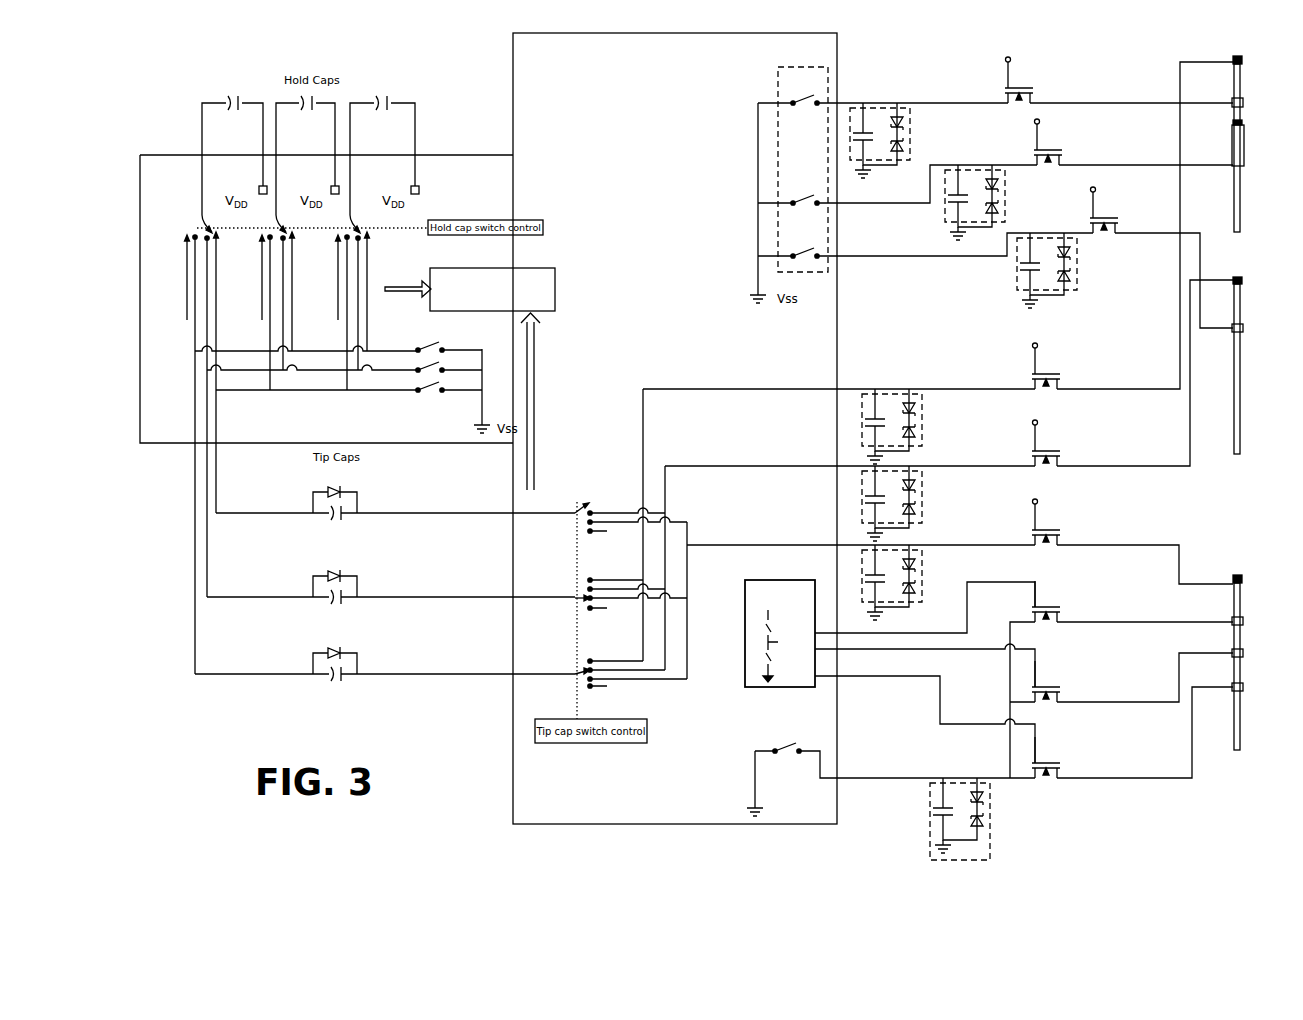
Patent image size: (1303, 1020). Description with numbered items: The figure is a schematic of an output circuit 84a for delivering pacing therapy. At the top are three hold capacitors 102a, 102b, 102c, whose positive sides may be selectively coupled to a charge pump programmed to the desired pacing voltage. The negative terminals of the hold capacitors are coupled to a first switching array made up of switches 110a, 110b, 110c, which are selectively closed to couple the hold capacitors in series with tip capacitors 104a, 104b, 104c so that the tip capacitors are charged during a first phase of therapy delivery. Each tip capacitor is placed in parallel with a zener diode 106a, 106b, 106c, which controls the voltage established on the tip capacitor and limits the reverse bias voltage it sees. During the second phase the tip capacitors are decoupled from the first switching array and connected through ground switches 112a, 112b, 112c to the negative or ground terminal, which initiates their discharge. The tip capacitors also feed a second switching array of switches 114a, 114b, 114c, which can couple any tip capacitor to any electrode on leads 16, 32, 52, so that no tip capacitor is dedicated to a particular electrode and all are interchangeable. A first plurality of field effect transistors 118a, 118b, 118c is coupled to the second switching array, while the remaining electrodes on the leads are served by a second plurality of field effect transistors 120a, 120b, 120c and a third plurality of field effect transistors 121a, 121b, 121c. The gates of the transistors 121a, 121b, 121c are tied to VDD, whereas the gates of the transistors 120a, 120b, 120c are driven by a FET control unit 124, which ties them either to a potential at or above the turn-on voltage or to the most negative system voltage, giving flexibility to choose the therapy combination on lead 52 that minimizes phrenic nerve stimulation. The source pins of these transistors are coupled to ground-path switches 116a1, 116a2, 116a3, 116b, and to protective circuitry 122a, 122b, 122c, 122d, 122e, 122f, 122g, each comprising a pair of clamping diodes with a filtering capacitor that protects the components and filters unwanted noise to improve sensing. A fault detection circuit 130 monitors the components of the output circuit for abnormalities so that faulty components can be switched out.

The output circuit 84a is at (655, 858).
The hold capacitor 102a is at (234, 155).
The hold capacitor 102b is at (307, 155).
The hold capacitor 102c is at (384, 155).
The tip capacitor 104a is at (336, 526).
The tip capacitor 104b is at (337, 608).
The tip capacitor 104c is at (336, 687).
The zener diode 106a is at (335, 492).
The zener diode 106b is at (335, 573).
The zener diode 106c is at (335, 652).
The switch 110a is at (220, 444).
The switch 110b is at (295, 302).
The switch 110c is at (370, 302).
The ground switch 112a is at (338, 342).
The ground switch 112b is at (344, 363).
The ground switch 112c is at (349, 383).
The switch 114a is at (631, 506).
The switch 114b is at (631, 585).
The switch 114c is at (631, 663).
The ground-path switch 116a1 is at (804, 94).
The ground-path switch 116a2 is at (804, 194).
The ground-path switch 116a3 is at (804, 247).
The ground-path switch 116b is at (767, 771).
The field effect transistor 118a is at (1113, 225).
The field effect transistor 118b is at (1113, 373).
The field effect transistor 118c is at (1113, 540).
The field effect transistor 120a is at (1132, 601).
The field effect transistor 120b is at (1132, 677).
The field effect transistor 120c is at (1132, 732).
The field effect transistor 121a is at (1099, 79).
The field effect transistor 121b is at (1114, 141).
The field effect transistor 121c is at (1142, 256).
The protective circuitry 122a is at (899, 147).
The protective circuitry 122b is at (984, 207).
The protective circuitry 122c is at (1056, 273).
The protective circuitry 122d is at (901, 426).
The protective circuitry 122e is at (901, 503).
The protective circuitry 122f is at (900, 582).
The protective circuitry 122g is at (980, 819).
The FET control unit 124 is at (745, 655).
The fault detection circuit 130 is at (492, 268).
The lead 32 is at (1249, 144).
The lead 16 is at (1249, 365).
The lead 52 is at (1249, 662).